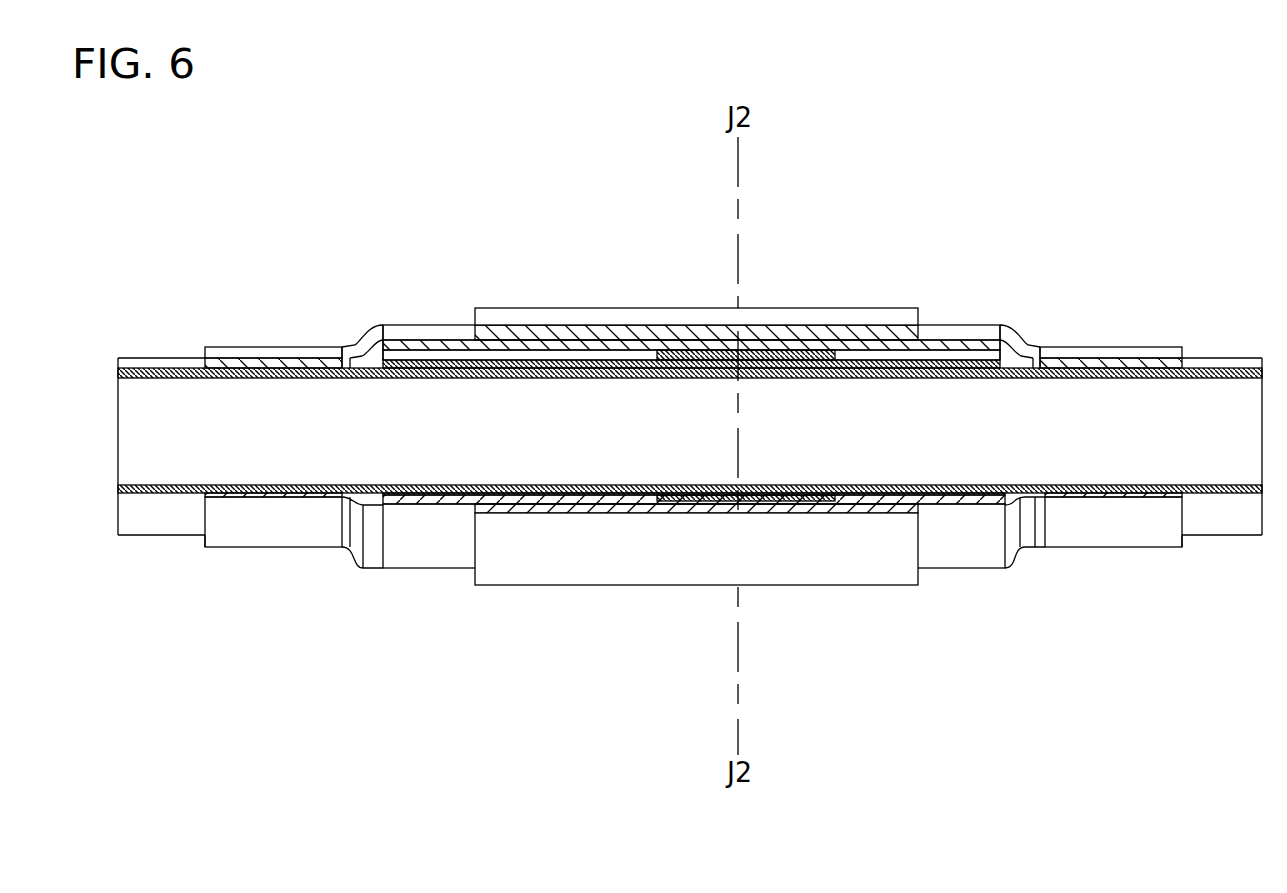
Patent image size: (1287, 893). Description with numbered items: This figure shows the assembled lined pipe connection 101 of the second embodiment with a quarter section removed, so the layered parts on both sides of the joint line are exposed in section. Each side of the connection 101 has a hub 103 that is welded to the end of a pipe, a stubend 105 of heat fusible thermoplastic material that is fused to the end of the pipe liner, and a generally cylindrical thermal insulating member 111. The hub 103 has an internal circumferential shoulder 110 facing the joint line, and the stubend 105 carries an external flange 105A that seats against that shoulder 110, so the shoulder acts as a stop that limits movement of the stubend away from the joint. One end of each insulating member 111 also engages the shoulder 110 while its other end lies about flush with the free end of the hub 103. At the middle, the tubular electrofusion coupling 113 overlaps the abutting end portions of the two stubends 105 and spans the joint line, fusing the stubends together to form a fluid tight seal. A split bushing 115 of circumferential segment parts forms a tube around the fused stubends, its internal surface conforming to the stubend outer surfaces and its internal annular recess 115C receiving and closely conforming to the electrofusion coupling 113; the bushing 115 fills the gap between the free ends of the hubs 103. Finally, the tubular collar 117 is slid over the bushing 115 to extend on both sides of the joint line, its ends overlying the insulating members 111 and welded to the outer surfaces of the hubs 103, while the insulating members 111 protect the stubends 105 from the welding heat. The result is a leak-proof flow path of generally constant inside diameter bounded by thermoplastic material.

The connection 101 is at (1128, 180).
The hub 103 is at (275, 548).
The stubend 105 is at (552, 338).
The external flange 105A is at (348, 346).
The internal circumferential shoulder 110 is at (362, 334).
The thermal insulating member 111 is at (436, 340).
The electrofusion coupling 113 is at (688, 352).
The bushing 115 is at (586, 352).
The internal annular recess 115C is at (766, 352).
The collar 117 is at (512, 308).